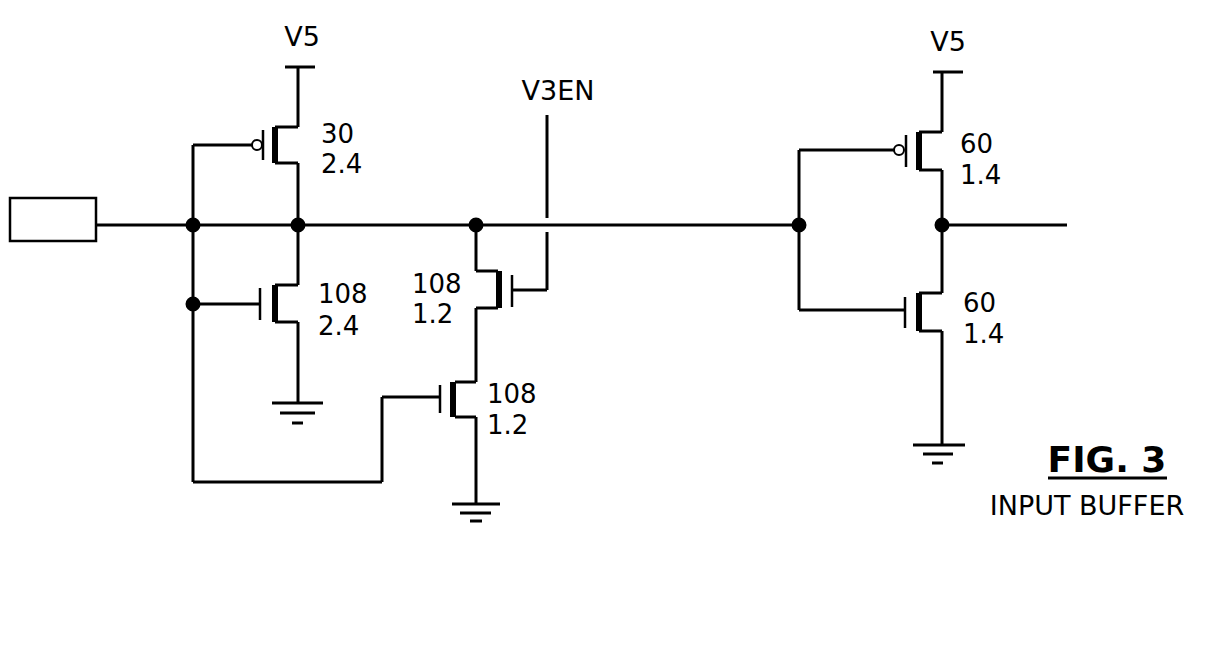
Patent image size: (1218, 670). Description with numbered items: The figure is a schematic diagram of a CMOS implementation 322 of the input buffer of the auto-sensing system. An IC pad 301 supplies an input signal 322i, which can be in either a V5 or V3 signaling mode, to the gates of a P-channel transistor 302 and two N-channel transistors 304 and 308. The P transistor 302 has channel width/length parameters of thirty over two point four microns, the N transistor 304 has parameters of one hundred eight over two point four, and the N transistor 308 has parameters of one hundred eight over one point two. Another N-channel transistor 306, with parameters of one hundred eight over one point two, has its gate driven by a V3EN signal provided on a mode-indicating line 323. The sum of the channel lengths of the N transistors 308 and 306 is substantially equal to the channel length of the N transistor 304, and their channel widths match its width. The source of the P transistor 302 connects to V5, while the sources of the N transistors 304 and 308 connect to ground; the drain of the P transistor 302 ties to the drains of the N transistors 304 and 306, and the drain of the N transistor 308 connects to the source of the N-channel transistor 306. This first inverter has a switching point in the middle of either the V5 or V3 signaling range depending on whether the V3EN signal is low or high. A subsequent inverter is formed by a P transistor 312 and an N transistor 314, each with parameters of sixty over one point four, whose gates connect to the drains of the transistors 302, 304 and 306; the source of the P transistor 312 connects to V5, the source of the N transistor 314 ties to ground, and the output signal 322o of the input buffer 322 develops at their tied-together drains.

The IC pad 301 is at (55, 198).
The CMOS implementation of input buffer 322 is at (142, 307).
The input signal 322i is at (147, 219).
The output signal 322o is at (1033, 228).
The P-channel transistor 302 is at (262, 127).
The N-channel transistor 304 is at (254, 323).
The N-channel transistor 306 is at (506, 312).
The N-channel transistor 308 is at (444, 422).
The mode-indicating line 323 is at (560, 141).
The P-channel transistor 312 is at (887, 137).
The N-channel transistor 314 is at (900, 325).